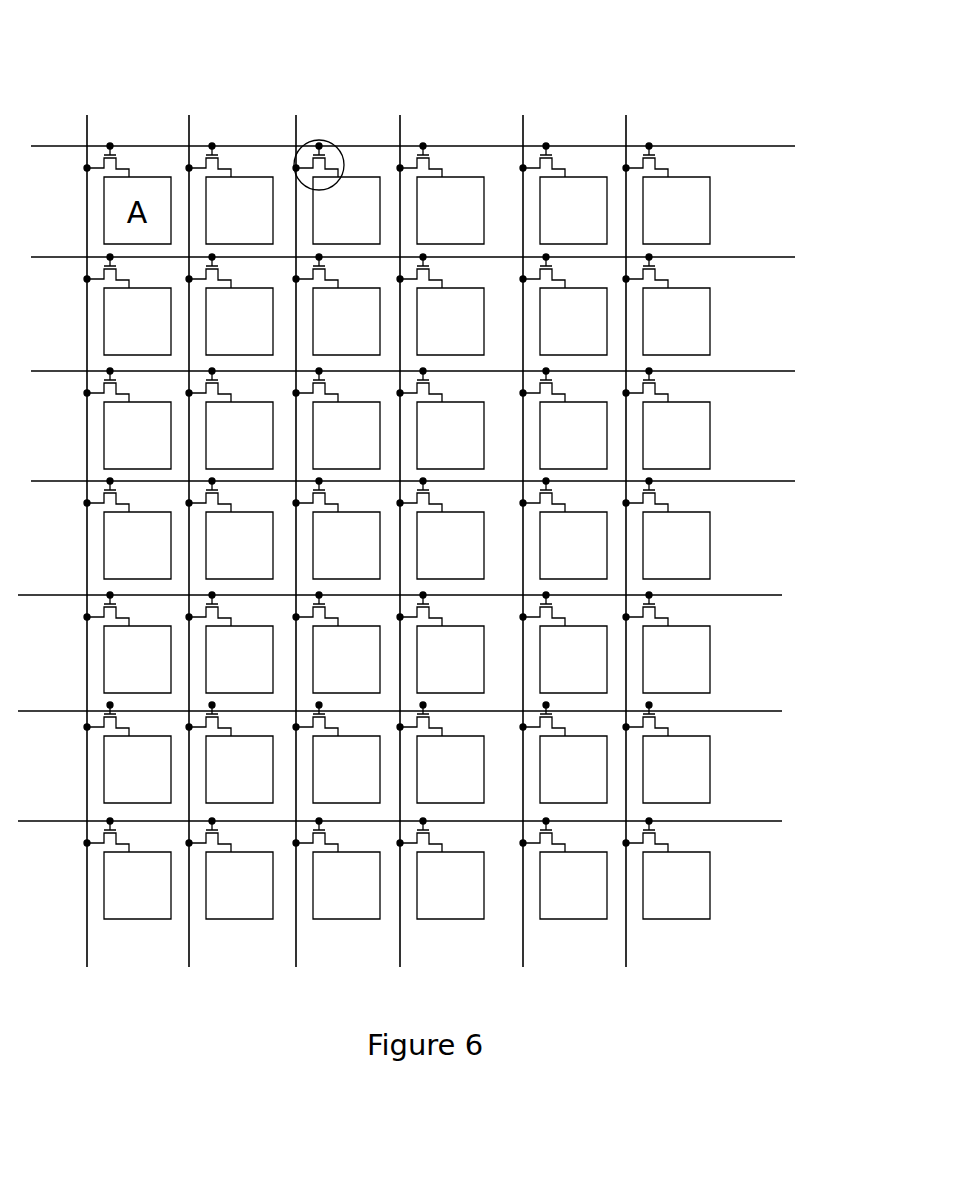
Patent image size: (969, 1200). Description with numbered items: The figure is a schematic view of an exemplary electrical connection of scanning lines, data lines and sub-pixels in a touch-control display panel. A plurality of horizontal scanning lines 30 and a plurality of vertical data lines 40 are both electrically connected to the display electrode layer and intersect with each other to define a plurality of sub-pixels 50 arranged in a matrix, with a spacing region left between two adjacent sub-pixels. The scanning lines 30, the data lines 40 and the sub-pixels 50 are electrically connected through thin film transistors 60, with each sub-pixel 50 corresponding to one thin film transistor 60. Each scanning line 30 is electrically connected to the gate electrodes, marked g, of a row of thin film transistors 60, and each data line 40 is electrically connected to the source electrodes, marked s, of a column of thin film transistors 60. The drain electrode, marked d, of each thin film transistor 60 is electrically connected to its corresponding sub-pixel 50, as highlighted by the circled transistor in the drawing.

The scanning line 30 is at (750, 143).
The data line 40 is at (523, 130).
The sub-pixel 50 is at (680, 197).
The thin film transistor 60 is at (326, 142).